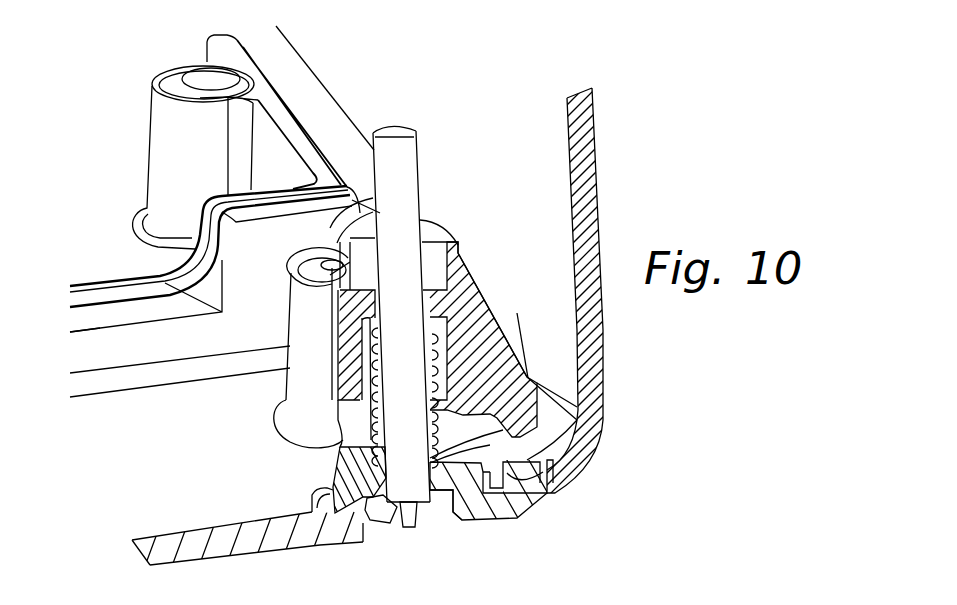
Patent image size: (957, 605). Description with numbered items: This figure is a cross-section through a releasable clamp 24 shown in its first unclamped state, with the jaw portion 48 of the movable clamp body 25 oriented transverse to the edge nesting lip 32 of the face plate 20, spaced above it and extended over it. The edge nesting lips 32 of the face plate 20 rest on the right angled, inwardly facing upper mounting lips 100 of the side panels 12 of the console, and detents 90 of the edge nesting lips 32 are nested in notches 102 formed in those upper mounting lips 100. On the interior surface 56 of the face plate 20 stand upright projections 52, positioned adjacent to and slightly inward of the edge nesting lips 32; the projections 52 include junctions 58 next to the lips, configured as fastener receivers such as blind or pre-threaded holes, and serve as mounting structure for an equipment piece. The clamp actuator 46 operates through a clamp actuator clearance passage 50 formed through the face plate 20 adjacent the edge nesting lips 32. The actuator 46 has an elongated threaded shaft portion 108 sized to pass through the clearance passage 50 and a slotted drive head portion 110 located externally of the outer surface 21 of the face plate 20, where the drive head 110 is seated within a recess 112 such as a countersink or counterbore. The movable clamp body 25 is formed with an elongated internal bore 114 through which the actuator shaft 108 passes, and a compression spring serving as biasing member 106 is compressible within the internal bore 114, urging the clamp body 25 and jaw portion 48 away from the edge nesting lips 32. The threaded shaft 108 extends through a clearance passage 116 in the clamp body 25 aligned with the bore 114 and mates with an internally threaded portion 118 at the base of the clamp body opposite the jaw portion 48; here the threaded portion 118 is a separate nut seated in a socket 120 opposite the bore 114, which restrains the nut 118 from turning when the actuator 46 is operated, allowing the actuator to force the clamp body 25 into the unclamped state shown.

The side panel 12 is at (598, 147).
The face plate 20 is at (110, 280).
The outer surface 21 is at (205, 560).
The releasable clamp 24 is at (517, 313).
The movable clamp body 25 is at (332, 346).
The edge nesting lip 32 is at (517, 520).
The clamp actuator 46 is at (394, 128).
The jaw portion 48 is at (486, 377).
The clamp actuator clearance passage 50 is at (390, 528).
The upright projection 52 is at (283, 120).
The interior surface 56 is at (185, 466).
The junction 58 is at (205, 78).
The detent 90 is at (527, 483).
The upper mounting lip 100 is at (553, 487).
The notch 102 is at (577, 420).
The biasing member 106 is at (336, 440).
The threaded shaft portion 108 is at (418, 134).
The drive head portion 110 is at (447, 515).
The recess 112 is at (360, 530).
The internal bore 114 is at (358, 392).
The clearance passage 116 is at (445, 288).
The internally threaded portion 118 is at (437, 222).
The socket 120 is at (452, 238).